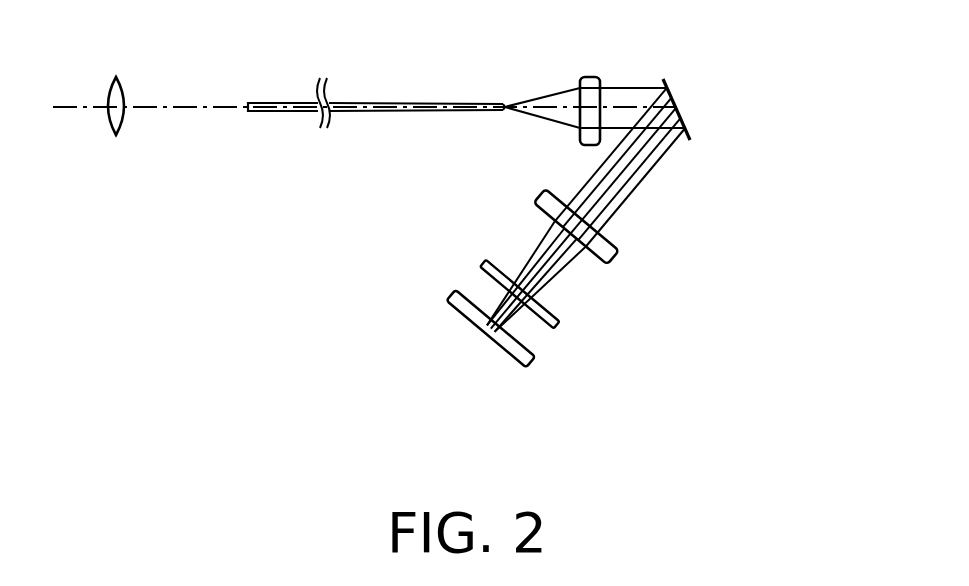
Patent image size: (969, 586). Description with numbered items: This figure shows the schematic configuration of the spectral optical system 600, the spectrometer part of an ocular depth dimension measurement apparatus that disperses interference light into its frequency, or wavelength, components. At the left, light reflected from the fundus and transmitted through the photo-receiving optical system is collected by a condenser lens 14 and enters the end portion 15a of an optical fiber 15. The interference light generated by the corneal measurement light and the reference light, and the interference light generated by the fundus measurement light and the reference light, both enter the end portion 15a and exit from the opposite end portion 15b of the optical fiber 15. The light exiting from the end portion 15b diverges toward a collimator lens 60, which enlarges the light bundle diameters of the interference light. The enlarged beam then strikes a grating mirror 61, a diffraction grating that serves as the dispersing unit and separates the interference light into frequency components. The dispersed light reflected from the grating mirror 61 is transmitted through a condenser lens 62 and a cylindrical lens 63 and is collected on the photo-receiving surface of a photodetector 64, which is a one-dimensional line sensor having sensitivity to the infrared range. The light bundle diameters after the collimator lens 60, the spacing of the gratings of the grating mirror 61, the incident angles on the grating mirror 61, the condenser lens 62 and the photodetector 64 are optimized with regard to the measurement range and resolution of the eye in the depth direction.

The condenser lens 14 is at (118, 96).
The optical fiber 15 is at (403, 102).
The end portion of optical fiber 15a is at (247, 102).
The end portion of optical fiber 15b is at (500, 103).
The collimator lens 60 is at (591, 76).
The grating mirror 61 is at (690, 138).
The condenser lens 62 is at (616, 258).
The cylindrical lens 63 is at (559, 325).
The photodetector 64 is at (531, 363).
The spectral optical system 600 is at (708, 74).